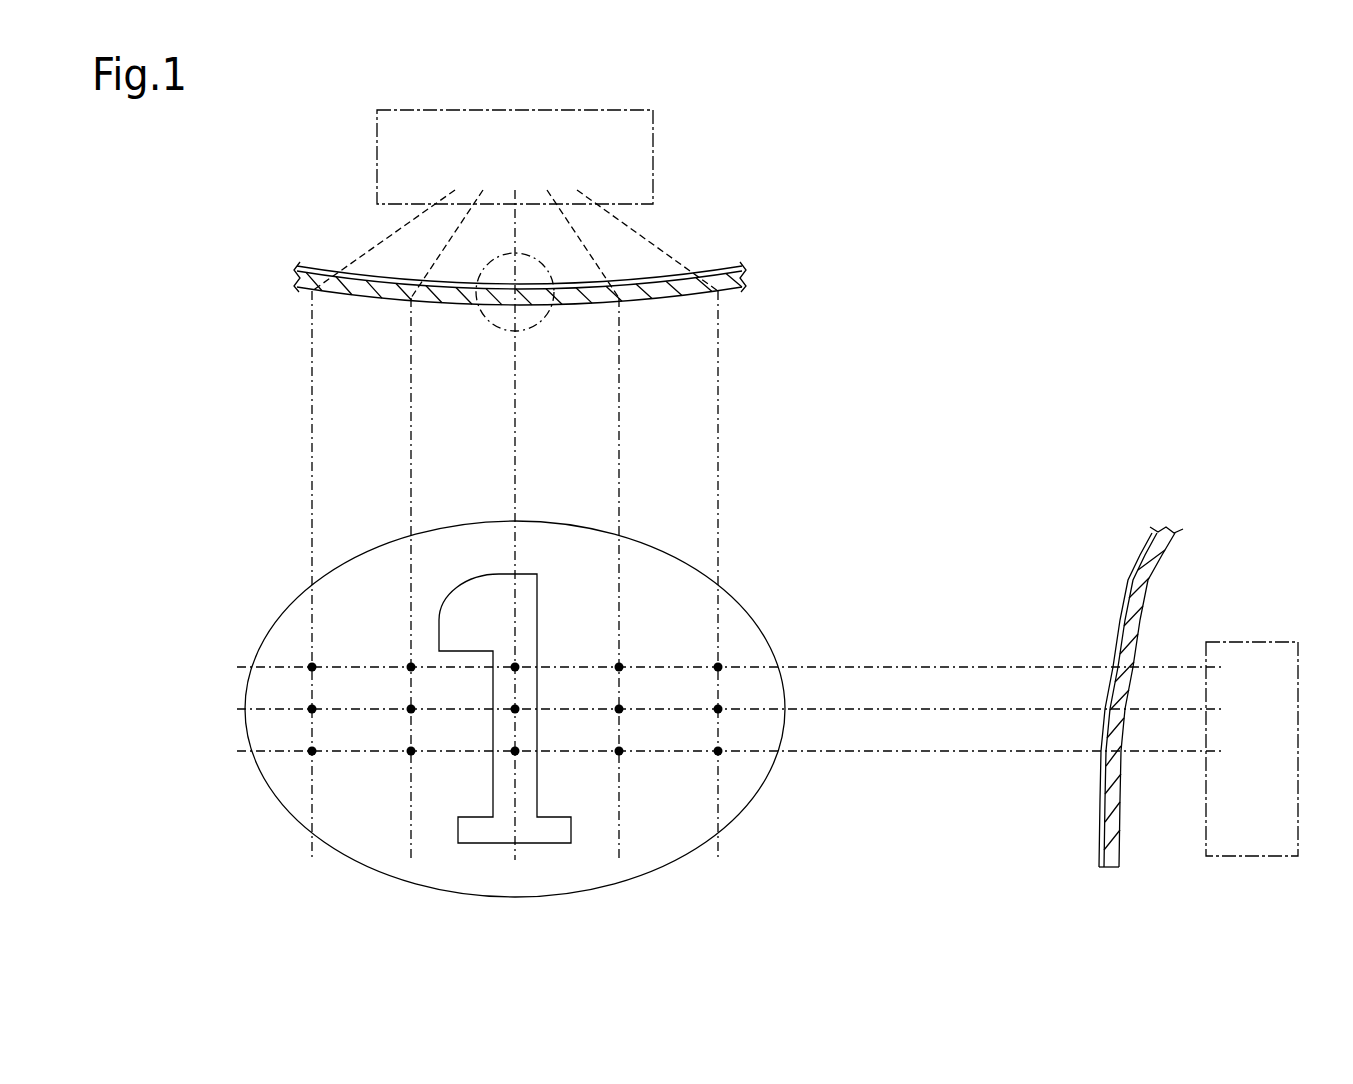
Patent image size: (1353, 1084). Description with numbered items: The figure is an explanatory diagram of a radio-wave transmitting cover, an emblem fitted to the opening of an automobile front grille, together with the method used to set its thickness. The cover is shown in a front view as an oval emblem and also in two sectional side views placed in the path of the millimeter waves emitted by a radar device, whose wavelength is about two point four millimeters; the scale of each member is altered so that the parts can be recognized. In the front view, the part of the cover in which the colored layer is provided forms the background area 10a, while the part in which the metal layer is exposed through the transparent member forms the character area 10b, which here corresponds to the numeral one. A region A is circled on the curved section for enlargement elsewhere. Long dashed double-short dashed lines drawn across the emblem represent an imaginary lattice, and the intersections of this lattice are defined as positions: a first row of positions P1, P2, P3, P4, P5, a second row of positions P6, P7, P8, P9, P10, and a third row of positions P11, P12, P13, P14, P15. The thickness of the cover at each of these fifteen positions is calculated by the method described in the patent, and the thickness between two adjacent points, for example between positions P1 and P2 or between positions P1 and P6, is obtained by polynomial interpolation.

The background area 10a is at (564, 877).
The character area 10b is at (474, 836).
The enlarged region A is at (490, 328).
The position P1 is at (295, 655).
The position P2 is at (394, 655).
The position P3 is at (498, 647).
The position P4 is at (602, 655).
The position P5 is at (701, 655).
The position P6 is at (295, 697).
The position P7 is at (394, 697).
The position P8 is at (488, 697).
The position P9 is at (602, 697).
The position P10 is at (694, 697).
The position P11 is at (288, 739).
The position P12 is at (387, 739).
The position P13 is at (481, 739).
The position P14 is at (595, 739).
The position P15 is at (694, 739).